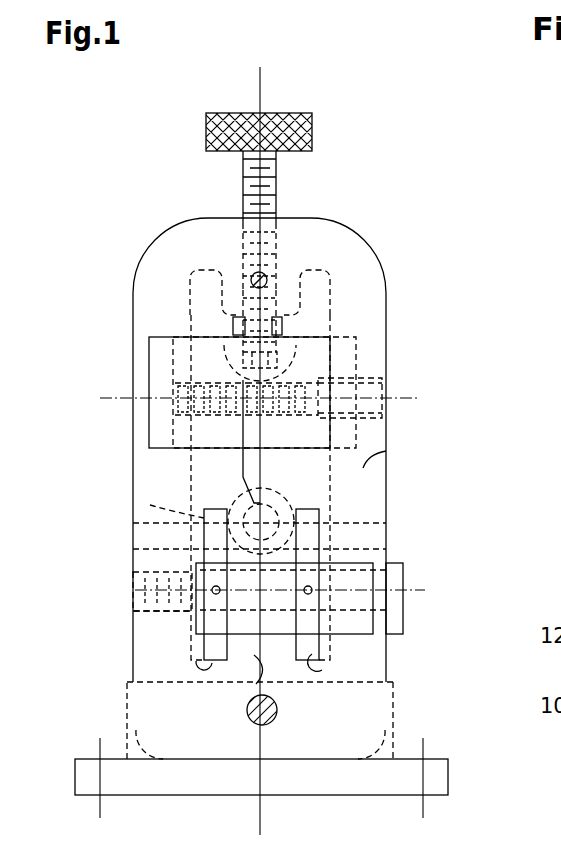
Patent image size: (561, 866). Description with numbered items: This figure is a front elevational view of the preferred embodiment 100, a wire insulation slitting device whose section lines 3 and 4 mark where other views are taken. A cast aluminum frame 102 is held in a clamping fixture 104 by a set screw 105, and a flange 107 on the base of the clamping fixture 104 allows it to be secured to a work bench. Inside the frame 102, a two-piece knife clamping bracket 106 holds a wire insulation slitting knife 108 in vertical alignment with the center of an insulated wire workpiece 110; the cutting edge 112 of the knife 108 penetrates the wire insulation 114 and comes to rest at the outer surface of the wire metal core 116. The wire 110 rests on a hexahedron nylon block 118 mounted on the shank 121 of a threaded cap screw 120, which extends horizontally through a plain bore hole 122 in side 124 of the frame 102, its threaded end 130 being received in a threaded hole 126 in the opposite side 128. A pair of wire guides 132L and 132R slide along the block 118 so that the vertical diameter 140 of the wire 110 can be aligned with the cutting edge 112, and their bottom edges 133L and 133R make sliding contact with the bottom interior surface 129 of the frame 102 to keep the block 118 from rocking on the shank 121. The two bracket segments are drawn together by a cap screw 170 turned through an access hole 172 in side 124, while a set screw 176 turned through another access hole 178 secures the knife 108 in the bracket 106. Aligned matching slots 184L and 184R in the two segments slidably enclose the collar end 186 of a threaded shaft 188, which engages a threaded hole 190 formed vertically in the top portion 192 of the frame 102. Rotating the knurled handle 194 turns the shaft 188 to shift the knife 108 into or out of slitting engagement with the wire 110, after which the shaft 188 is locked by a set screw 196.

The embodiment 100 is at (205, 212).
The cast aluminum frame 102 is at (390, 261).
The clamping fixture 104 is at (386, 750).
The set screw 105 is at (277, 710).
The two-piece knife clamping bracket 106 is at (174, 359).
The flange 107 is at (440, 782).
The wire insulation slitting knife 108 is at (256, 464).
The insulated wire workpiece 110 is at (296, 492).
The cutting edge 112 is at (150, 505).
The wire insulation 114 is at (386, 523).
The wire metal core 116 is at (386, 549).
The hexahedron nylon block 118 is at (290, 594).
The threaded cap screw 120 is at (395, 600).
The shank 121 is at (350, 568).
The plain bore hole 122 is at (378, 630).
The side 124 is at (386, 451).
The threaded hole 126 is at (165, 612).
The side 128 is at (165, 481).
The bottom interior surface 129 is at (258, 683).
The threaded end 130 is at (135, 583).
The wire guide 132L is at (185, 557).
The wire guide 132R is at (311, 517).
The bottom edge 133L is at (175, 668).
The bottom edge 133R is at (345, 667).
The vertical diameter 140 is at (240, 528).
The cap screw 170 is at (229, 406).
The access hole 172 is at (365, 378).
The set screw 176 is at (297, 405).
The access hole 178 is at (385, 392).
The slot 184L is at (217, 306).
The slot 184R is at (300, 306).
The collar end 186 is at (246, 363).
The threaded shaft 188 is at (277, 181).
The threaded hole 190 is at (272, 233).
The top portion 192 is at (237, 275).
The knurled handle 194 is at (312, 128).
The set screw 196 is at (268, 273).
The section line 3 is at (79, 377).
The section line 4 is at (243, 487).